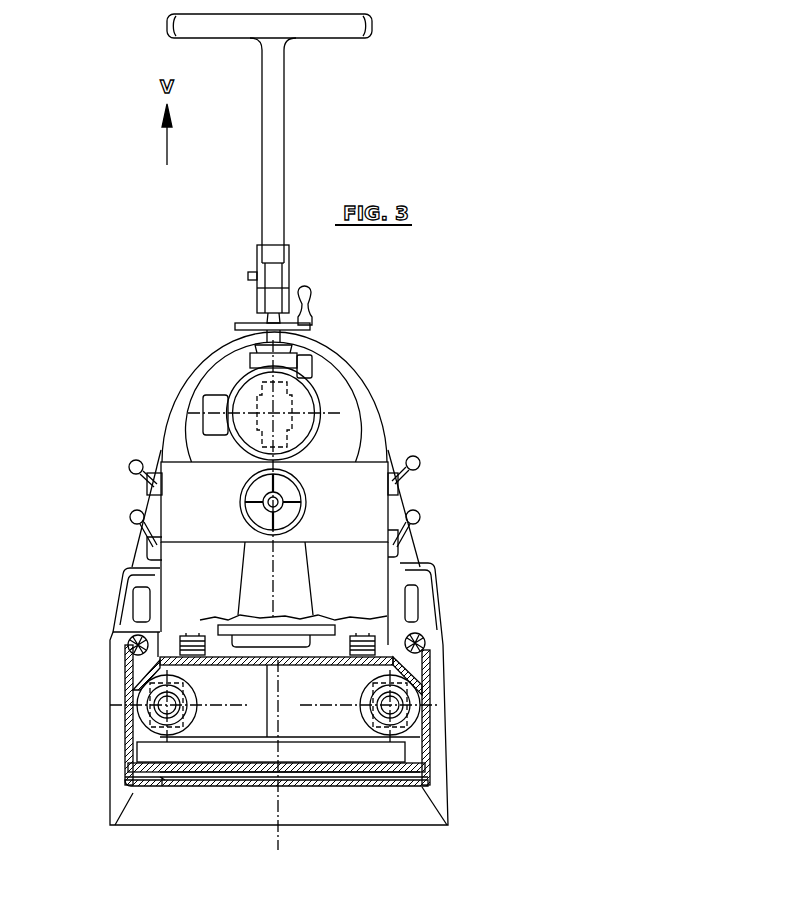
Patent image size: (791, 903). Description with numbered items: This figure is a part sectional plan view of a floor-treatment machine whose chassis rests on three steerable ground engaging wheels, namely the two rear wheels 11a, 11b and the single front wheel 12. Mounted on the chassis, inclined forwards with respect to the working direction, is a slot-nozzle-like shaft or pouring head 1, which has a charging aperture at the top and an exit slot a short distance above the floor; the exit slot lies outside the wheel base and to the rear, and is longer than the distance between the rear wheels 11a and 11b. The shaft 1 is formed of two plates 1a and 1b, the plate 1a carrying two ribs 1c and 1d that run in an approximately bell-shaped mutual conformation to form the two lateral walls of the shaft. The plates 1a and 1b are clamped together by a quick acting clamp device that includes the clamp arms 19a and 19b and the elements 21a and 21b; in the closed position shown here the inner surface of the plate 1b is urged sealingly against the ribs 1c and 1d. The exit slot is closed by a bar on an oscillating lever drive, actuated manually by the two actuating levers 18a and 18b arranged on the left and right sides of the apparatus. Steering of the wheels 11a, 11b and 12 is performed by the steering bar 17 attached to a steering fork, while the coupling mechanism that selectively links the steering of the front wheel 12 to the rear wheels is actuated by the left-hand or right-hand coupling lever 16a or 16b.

The shaft or pouring head 1 is at (242, 775).
The plate 1a is at (207, 767).
The plate 1b is at (302, 785).
The rib 1c is at (162, 775).
The rib 1d is at (393, 777).
The rear wheel 11a is at (152, 720).
The rear wheel 11b is at (405, 713).
The front wheel 12 is at (265, 387).
The coupling lever 16a is at (130, 514).
The coupling lever 16b is at (420, 514).
The steering bar 17 is at (272, 181).
The actuating lever 18a is at (129, 464).
The actuating lever 18b is at (420, 462).
The clamp arm 19a is at (130, 805).
The clamp arm 19b is at (428, 807).
The quick acting clamp device element 21a is at (130, 646).
The quick acting clamp device element 21b is at (425, 645).